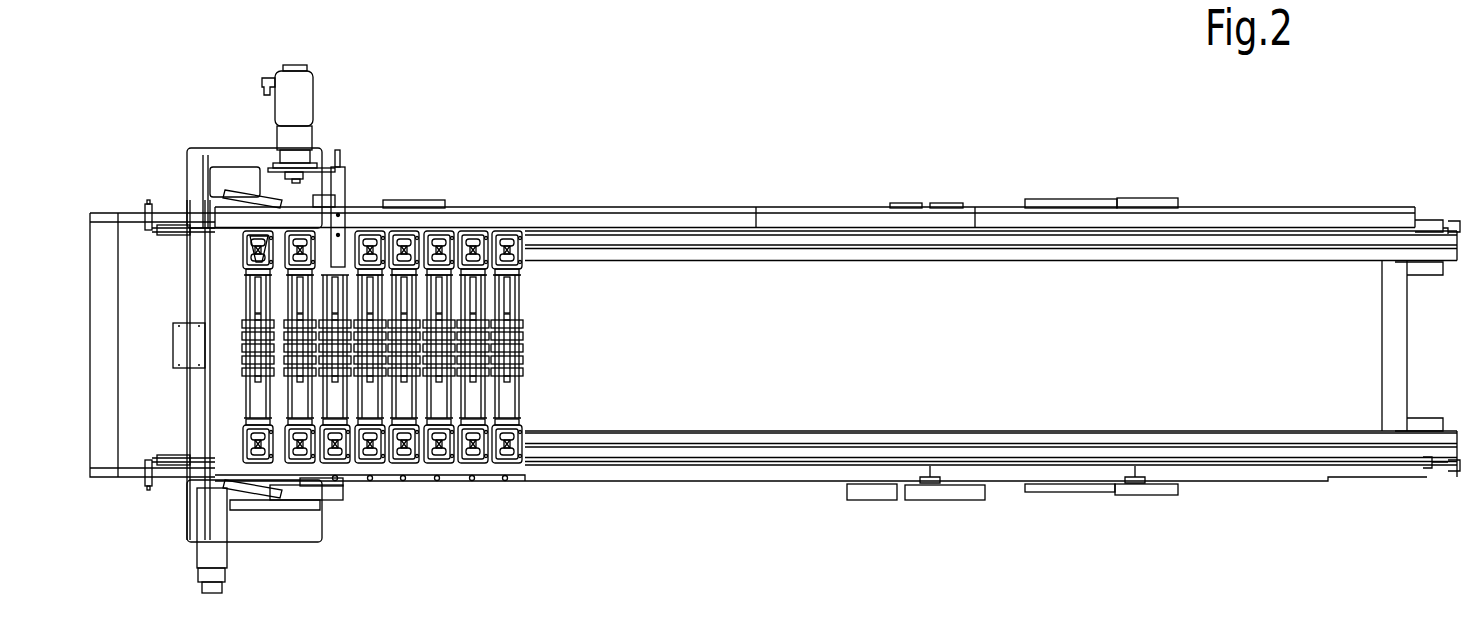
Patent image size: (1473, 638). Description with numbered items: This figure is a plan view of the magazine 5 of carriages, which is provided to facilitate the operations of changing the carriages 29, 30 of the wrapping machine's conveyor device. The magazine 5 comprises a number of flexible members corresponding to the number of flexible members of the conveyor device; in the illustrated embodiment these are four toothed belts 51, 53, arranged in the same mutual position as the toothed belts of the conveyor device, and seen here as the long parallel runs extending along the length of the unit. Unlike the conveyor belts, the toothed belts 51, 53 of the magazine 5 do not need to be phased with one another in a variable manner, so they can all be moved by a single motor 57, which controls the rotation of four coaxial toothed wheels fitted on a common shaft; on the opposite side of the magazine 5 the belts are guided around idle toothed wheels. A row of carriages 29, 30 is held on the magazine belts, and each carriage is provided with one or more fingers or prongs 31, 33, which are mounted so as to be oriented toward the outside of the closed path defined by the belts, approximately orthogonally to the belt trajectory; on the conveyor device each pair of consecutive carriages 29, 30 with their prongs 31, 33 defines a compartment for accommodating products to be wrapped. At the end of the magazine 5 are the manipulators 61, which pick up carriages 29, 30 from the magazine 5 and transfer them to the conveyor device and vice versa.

The magazine 5 is at (641, 184).
The carriage 29 is at (428, 230).
The carriage 30 is at (400, 228).
The prong 31 is at (482, 312).
The prong 33 is at (513, 353).
The toothed belt 51 is at (724, 252).
The toothed belt 53 is at (647, 240).
The motor 57 is at (311, 90).
The manipulator 61 is at (181, 196).